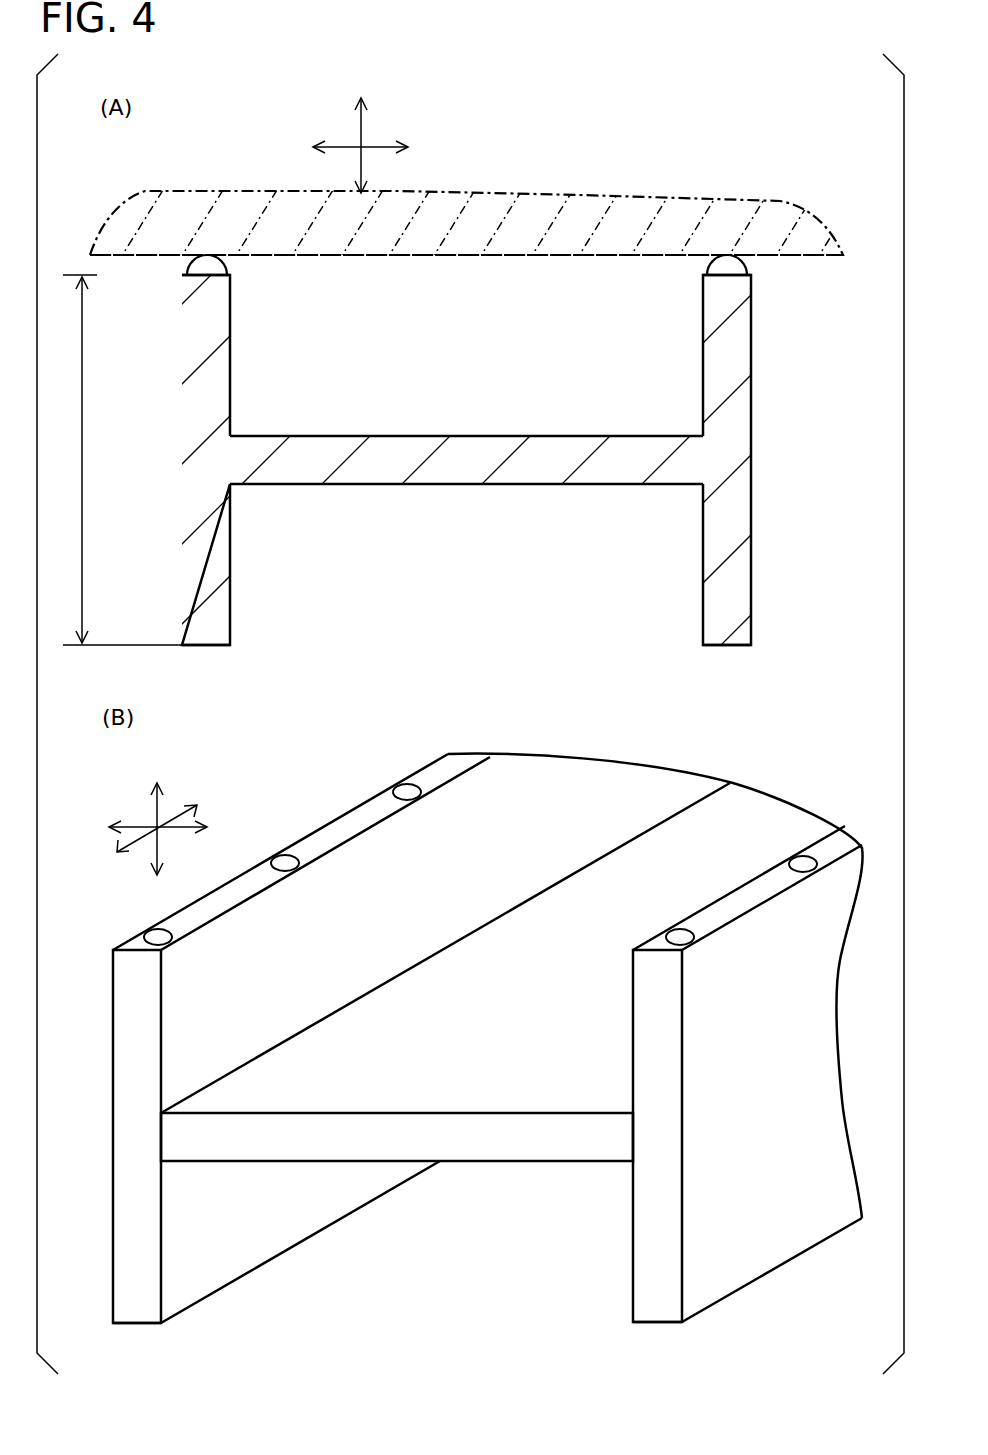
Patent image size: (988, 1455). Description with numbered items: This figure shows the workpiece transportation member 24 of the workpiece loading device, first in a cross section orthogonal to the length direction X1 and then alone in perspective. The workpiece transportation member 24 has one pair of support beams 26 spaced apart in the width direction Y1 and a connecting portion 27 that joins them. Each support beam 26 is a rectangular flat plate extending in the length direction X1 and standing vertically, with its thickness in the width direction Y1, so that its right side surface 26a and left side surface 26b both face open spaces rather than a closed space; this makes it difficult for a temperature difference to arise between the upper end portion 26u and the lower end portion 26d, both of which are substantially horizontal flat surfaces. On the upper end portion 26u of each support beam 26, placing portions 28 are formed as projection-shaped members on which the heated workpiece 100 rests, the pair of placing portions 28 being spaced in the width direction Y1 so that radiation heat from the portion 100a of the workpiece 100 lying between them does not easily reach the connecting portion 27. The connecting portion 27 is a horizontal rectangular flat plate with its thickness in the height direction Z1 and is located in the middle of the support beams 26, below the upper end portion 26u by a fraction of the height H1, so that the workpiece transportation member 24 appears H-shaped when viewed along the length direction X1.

The workpiece transportation member 24 is at (752, 412).
The support beam 26 is at (182, 507).
The right side surface 26a is at (230, 587).
The left side surface 26b is at (182, 575).
The lower end portion 26d is at (207, 645).
The upper end portion 26u is at (200, 262).
The connecting portion 27 is at (432, 435).
The placing portion 28 is at (224, 260).
The workpiece 100 is at (507, 208).
The portion of the workpiece 100a is at (450, 260).
The height of the support beam H1 is at (122, 460).
The length direction X1 is at (173, 822).
The width direction Y1 is at (342, 147).
The height direction Z1 is at (363, 127).